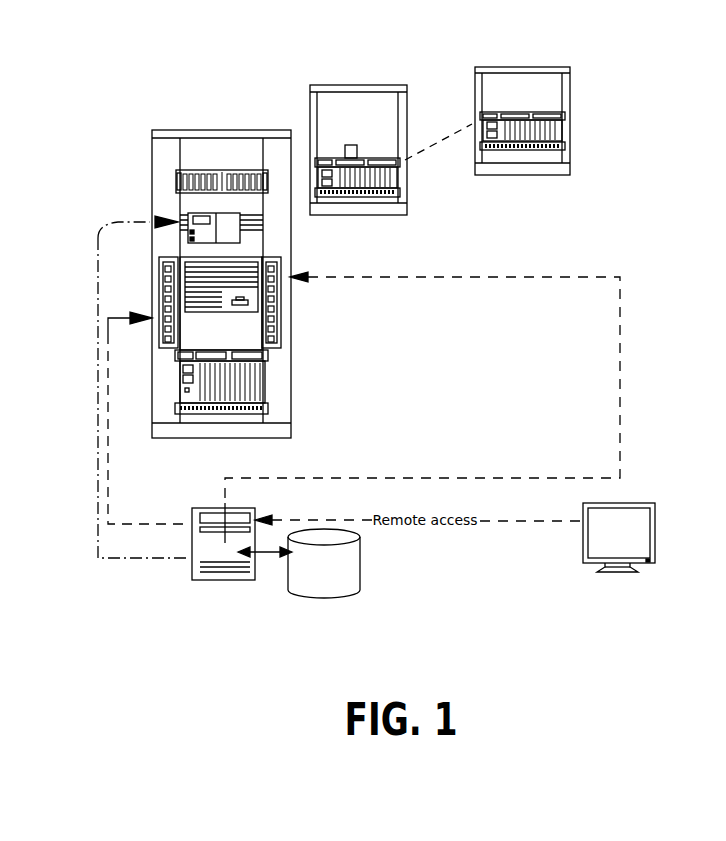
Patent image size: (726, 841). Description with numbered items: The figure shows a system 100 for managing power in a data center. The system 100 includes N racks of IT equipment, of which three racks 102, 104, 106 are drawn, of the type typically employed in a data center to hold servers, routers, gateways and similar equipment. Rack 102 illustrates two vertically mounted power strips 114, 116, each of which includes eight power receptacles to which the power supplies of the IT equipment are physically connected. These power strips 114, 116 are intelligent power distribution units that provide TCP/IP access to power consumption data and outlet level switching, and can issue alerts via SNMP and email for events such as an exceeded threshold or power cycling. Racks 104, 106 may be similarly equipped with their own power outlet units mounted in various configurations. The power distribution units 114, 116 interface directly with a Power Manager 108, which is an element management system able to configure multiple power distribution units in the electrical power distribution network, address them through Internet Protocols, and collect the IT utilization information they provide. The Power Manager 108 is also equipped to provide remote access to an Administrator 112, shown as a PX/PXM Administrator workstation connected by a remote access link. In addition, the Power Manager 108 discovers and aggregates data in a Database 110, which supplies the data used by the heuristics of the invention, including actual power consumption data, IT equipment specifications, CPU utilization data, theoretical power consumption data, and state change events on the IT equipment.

The system 100 is at (457, 19).
The rack 102 is at (221, 263).
The rack 104 is at (358, 128).
The rack 106 is at (522, 100).
The Power Manager 108 is at (216, 531).
The Database 110 is at (331, 581).
The Administrator 112 is at (625, 551).
The power strip 114 is at (285, 262).
The power strip 116 is at (160, 262).